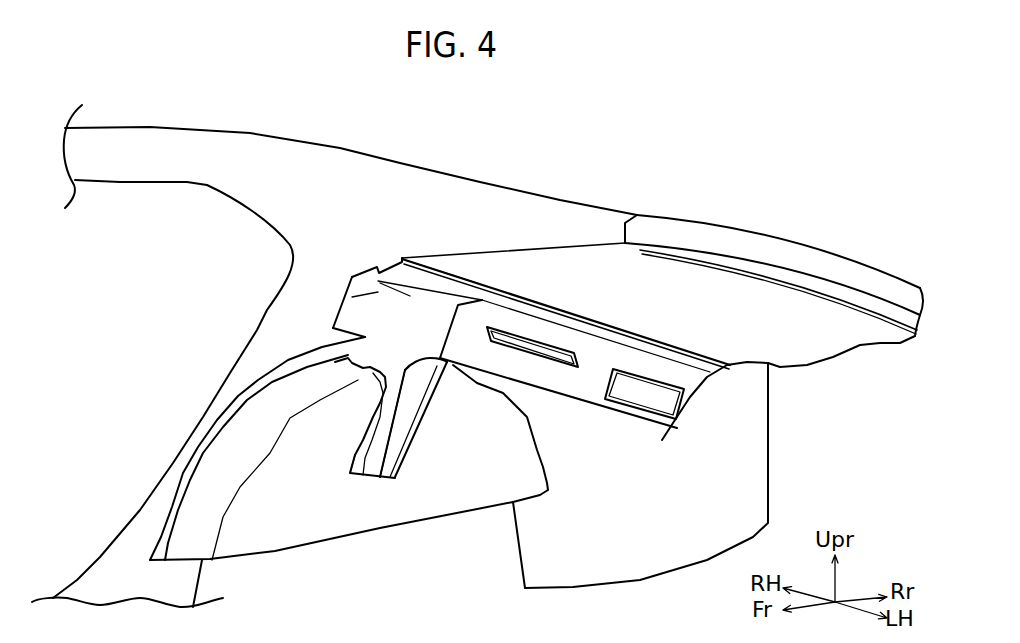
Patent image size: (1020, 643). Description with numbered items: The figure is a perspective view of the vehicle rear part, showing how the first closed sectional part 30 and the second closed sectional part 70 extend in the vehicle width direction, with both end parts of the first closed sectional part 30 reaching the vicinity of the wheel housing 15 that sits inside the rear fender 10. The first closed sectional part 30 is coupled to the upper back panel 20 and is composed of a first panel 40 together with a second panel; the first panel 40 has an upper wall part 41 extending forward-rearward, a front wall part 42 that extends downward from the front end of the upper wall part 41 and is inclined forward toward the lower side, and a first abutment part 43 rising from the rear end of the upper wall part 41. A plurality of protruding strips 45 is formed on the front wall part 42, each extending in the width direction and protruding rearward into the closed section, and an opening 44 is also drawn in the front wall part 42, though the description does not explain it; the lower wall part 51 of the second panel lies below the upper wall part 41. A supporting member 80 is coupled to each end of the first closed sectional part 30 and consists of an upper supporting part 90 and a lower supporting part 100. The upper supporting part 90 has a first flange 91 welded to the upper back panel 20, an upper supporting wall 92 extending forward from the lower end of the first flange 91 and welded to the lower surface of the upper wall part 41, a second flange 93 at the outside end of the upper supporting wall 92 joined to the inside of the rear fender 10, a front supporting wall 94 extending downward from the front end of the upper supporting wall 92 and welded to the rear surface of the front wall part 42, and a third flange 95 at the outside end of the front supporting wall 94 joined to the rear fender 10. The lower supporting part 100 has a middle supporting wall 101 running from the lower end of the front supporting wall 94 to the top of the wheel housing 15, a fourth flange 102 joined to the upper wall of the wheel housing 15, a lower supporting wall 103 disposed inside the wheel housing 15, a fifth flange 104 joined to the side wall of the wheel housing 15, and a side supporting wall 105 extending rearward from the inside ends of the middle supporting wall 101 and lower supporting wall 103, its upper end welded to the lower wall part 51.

The rear fender 10 is at (402, 164).
The wheel housing 15 is at (350, 517).
The upper back panel 20 is at (596, 253).
The first closed sectional part 30 is at (645, 460).
The first panel 40 is at (572, 365).
The upper wall part 41 is at (553, 327).
The front wall part 42 is at (553, 380).
The first abutment part 43 is at (712, 356).
The opening in roof side rail 44 is at (681, 427).
The protruding strip 45 is at (570, 375).
The lower wall part 51 is at (518, 385).
The second closed sectional part 70 is at (797, 224).
The supporting member 80 is at (403, 260).
The upper supporting part 90 is at (403, 280).
The first flange 91 is at (472, 281).
The upper supporting wall 92 is at (443, 292).
The second flange 93 is at (392, 263).
The front supporting wall 94 is at (352, 297).
The third flange 95 is at (335, 328).
The lower supporting part 100 is at (349, 459).
The middle supporting wall 101 is at (416, 418).
The fourth flange 102 is at (345, 360).
The lower supporting wall 103 is at (385, 450).
The fifth flange 104 is at (355, 447).
The side supporting wall 105 is at (430, 415).